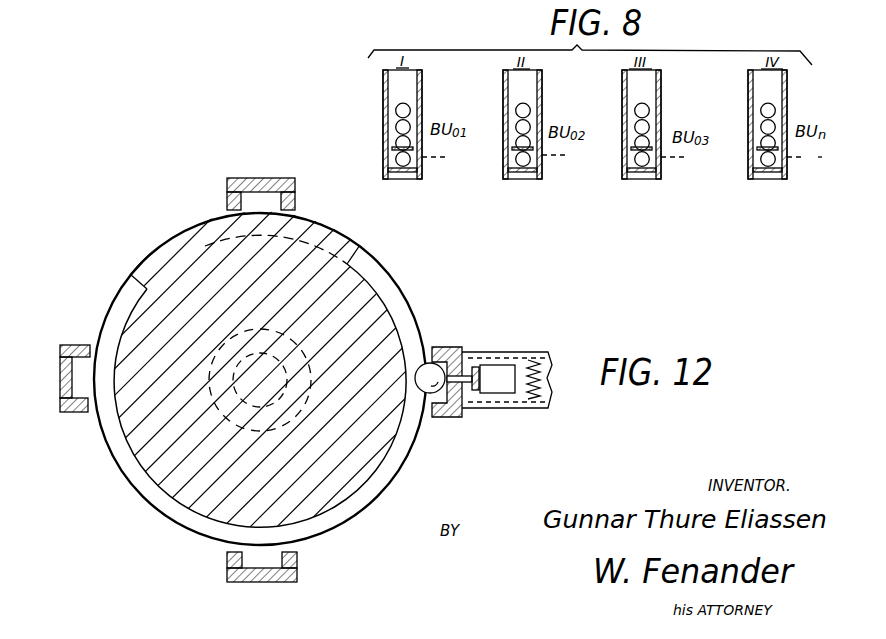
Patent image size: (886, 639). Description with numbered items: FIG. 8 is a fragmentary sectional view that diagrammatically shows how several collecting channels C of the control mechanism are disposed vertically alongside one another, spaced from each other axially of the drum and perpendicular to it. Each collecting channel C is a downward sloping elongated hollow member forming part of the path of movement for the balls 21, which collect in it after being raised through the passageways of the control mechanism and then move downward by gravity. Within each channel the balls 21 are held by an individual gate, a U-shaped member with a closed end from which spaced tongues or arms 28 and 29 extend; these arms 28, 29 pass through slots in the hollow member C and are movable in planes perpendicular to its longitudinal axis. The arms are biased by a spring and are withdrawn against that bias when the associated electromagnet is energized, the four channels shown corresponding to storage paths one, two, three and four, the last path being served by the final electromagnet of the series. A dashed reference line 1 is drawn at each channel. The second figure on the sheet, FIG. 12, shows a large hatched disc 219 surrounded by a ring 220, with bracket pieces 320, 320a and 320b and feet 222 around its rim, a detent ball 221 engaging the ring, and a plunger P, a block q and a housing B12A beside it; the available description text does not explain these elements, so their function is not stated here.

In FIG. 8, the collecting channel C is at (383, 92).
In FIG. 8, the balls 21 is at (405, 110).
In FIG. 8, the arm 28 is at (392, 148).
In FIG. 8, the arm 29 is at (393, 169).
In FIG. 8, the reference level line 1 is at (622, 151).
In FIG. 12, the disc 219 is at (152, 465).
In FIG. 12, the ring 220 is at (340, 521).
In FIG. 12, the detent ball 221 is at (420, 392).
In FIG. 12, the guide feet 222 is at (227, 200).
In FIG. 12, the bracket 320 is at (295, 195).
In FIG. 12, the bracket stem 320a is at (62, 362).
In FIG. 12, the bracket arm 320b is at (78, 345).
In FIG. 12, the plunger P is at (468, 392).
In FIG. 12, the contact block q is at (486, 394).
In FIG. 12, the switch housing B12A is at (507, 368).